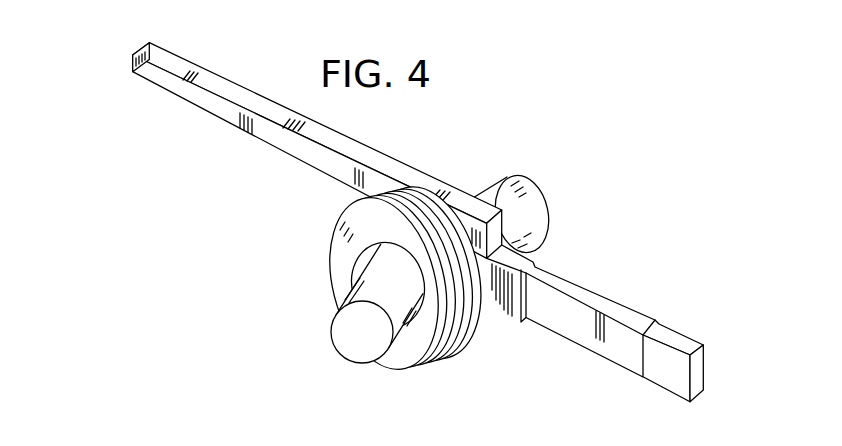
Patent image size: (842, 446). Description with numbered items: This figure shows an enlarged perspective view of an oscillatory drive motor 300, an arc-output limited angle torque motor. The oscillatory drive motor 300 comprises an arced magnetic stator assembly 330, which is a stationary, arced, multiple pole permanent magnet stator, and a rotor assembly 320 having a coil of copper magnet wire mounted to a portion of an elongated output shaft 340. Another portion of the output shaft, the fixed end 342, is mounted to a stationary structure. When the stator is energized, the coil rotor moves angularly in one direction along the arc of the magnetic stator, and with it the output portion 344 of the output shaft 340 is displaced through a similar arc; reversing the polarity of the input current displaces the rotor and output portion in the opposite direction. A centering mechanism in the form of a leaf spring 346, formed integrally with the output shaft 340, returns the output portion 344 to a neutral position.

The oscillatory drive motor 300 is at (414, 222).
The rotor assembly 320 is at (343, 237).
The arced magnetic stator assembly 330 is at (343, 331).
The output shaft 340 is at (409, 157).
The fixed end 342 is at (675, 372).
The output portion 344 is at (134, 59).
The leaf spring 346 is at (578, 322).